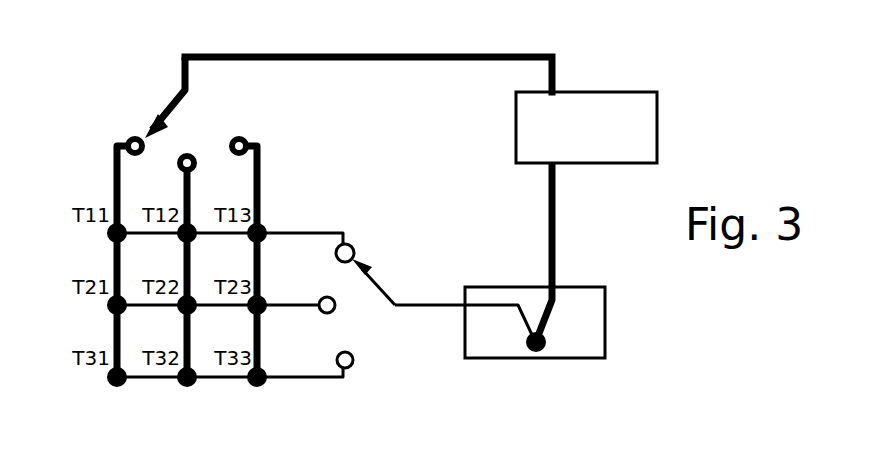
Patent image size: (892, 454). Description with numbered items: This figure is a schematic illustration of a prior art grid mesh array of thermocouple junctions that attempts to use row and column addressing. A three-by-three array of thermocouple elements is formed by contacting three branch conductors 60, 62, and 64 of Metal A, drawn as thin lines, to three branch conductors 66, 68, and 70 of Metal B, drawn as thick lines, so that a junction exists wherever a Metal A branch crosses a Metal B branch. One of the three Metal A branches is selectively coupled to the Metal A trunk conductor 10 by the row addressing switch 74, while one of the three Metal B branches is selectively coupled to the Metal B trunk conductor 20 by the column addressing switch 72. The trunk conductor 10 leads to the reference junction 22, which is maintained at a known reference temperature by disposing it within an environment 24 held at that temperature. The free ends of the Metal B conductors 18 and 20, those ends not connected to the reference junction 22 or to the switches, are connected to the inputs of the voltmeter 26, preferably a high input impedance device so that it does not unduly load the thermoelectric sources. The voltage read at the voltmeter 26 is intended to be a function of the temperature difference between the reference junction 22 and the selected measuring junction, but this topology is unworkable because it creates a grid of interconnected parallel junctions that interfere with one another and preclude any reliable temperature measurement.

The Metal A trunk conductor 10 is at (428, 312).
The Metal B conductor 18 is at (560, 198).
The Metal B trunk conductor 20 is at (446, 64).
The reference junction 22 is at (557, 340).
The environment 24 is at (595, 308).
The voltmeter 26 is at (608, 92).
The Metal A branch conductor 60 is at (307, 225).
The Metal A branch conductor 62 is at (285, 300).
The Metal A branch conductor 64 is at (286, 372).
The Metal B branch conductor 66 is at (103, 180).
The Metal B branch conductor 68 is at (192, 195).
The Metal B branch conductor 70 is at (265, 172).
The column addressing switch 72 is at (163, 95).
The row addressing switch 74 is at (382, 280).